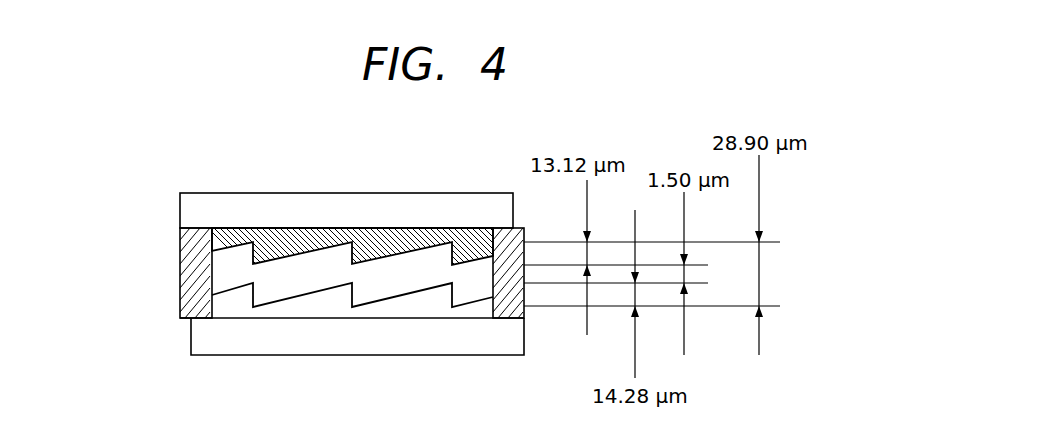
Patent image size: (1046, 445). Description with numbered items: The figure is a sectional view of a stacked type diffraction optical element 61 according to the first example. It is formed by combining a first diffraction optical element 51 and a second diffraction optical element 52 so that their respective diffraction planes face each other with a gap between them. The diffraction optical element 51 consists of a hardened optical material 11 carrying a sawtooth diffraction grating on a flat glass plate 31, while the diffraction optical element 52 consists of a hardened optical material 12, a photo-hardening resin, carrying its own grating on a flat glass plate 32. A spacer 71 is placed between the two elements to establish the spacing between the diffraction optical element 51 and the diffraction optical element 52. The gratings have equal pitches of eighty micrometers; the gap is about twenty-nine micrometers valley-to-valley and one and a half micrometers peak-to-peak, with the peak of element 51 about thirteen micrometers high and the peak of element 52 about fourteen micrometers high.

The optical material 11 is at (420, 228).
The optical material 12 is at (315, 310).
The flat glass plate 31 is at (333, 204).
The flat glass plate 32 is at (386, 340).
The diffraction optical element 51 is at (170, 190).
The diffraction optical element 52 is at (170, 288).
The stacked type diffraction optical element 61 is at (107, 180).
The spacer 71 is at (197, 232).